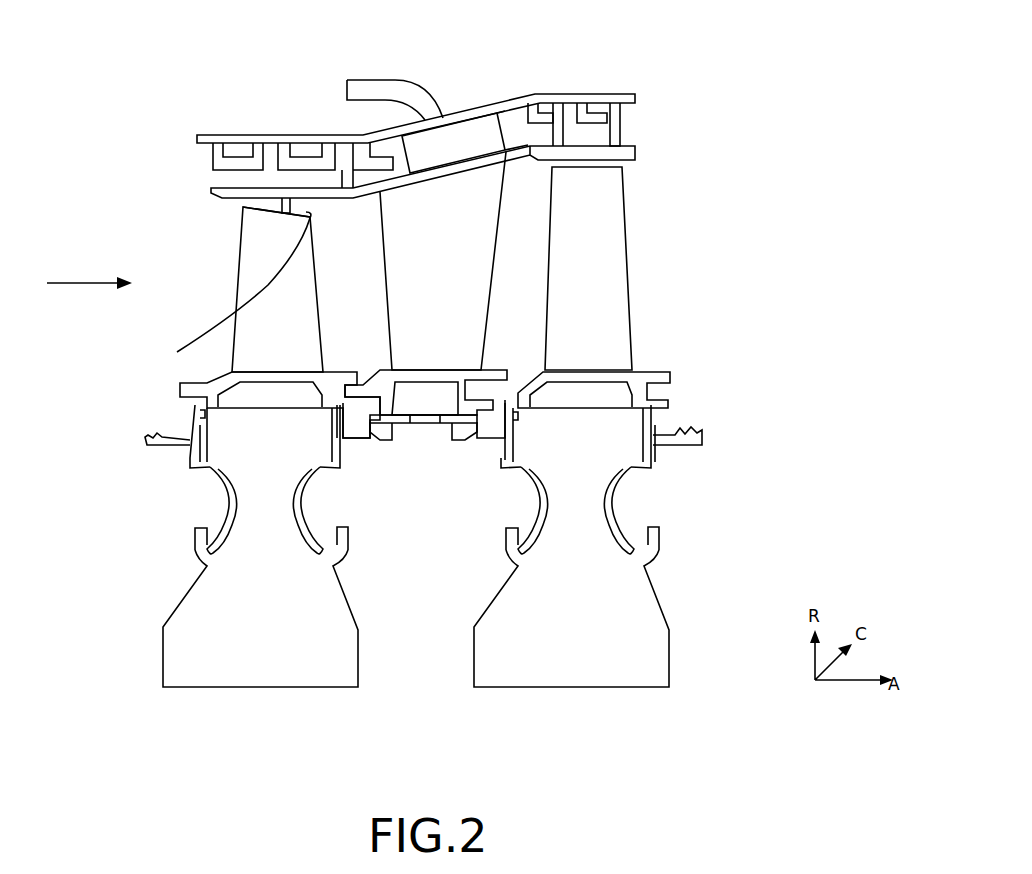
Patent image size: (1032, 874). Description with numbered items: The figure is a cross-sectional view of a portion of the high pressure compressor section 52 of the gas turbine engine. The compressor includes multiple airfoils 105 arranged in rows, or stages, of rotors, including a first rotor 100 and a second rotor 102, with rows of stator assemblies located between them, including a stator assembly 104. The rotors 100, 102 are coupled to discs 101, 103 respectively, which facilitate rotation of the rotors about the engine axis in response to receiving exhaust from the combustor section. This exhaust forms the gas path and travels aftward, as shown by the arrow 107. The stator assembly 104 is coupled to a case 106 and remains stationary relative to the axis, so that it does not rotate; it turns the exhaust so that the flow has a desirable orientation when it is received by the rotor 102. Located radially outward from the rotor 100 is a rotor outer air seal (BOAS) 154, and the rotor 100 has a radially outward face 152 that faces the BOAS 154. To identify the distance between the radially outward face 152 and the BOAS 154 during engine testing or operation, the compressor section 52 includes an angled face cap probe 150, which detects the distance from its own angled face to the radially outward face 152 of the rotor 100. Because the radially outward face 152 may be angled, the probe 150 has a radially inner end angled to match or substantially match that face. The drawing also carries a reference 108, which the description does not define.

The high pressure compressor section 52 is at (703, 70).
The first rotor 100 is at (237, 263).
The disc 101 is at (342, 613).
The second rotor 102 is at (600, 212).
The disc 103 is at (660, 657).
The stator assembly 104 is at (392, 277).
The airfoils 105 is at (202, 302).
The case 106 is at (497, 93).
The arrow 107 is at (73, 283).
The seal 108 is at (597, 408).
The angled face cap probe 150 is at (286, 206).
The radially outward face 152 is at (226, 286).
The rotor outer air seal (BOAS) 154 is at (294, 192).